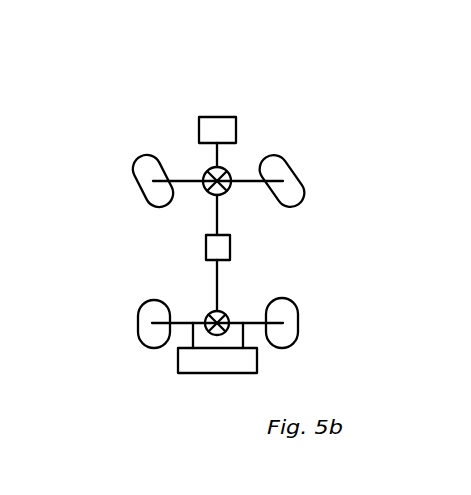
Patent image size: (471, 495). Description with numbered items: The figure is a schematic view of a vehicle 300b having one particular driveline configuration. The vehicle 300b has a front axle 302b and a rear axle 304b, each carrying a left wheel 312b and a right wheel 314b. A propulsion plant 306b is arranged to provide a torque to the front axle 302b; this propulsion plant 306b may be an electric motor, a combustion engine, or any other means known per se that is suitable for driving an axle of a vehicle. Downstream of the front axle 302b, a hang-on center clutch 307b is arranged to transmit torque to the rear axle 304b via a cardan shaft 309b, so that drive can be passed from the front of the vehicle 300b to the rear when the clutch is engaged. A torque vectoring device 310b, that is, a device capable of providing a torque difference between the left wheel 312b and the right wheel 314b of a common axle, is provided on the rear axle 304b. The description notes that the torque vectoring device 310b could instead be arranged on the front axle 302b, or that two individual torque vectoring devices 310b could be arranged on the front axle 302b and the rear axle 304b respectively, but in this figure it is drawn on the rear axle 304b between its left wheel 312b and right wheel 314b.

The vehicle 300b is at (278, 118).
The front axle 302b is at (245, 181).
The rear axle 304b is at (240, 322).
The propulsion plant 306b is at (217, 117).
The hang-on center clutch 307b is at (206, 248).
The cardan shaft 309b is at (217, 292).
The torque vectoring device 310b is at (212, 371).
The left wheel 312b is at (140, 188).
The right wheel 314b is at (294, 172).